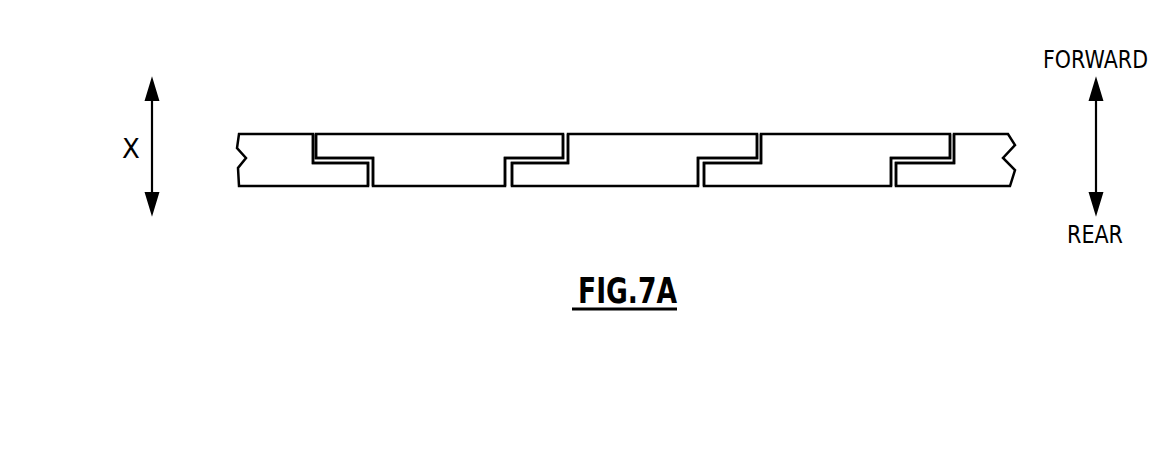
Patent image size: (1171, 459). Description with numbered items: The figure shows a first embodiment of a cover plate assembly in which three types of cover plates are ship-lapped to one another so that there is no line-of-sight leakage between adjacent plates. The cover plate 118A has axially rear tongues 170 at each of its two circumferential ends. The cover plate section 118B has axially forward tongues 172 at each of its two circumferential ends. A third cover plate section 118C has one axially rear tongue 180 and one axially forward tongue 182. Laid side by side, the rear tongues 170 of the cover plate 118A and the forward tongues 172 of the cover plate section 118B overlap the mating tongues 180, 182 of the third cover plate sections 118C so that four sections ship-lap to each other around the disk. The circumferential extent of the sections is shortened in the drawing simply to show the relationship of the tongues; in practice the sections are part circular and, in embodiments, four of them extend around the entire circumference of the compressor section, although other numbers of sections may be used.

The cover plate 118A is at (284, 148).
The cover plate section 118B is at (452, 148).
The third cover plate section 118C is at (663, 148).
The axially rear tongues 170 is at (339, 175).
The axially forward tongues 172 is at (346, 143).
The axially rear tongue 180 is at (539, 175).
The axially forward tongue 182 is at (730, 143).